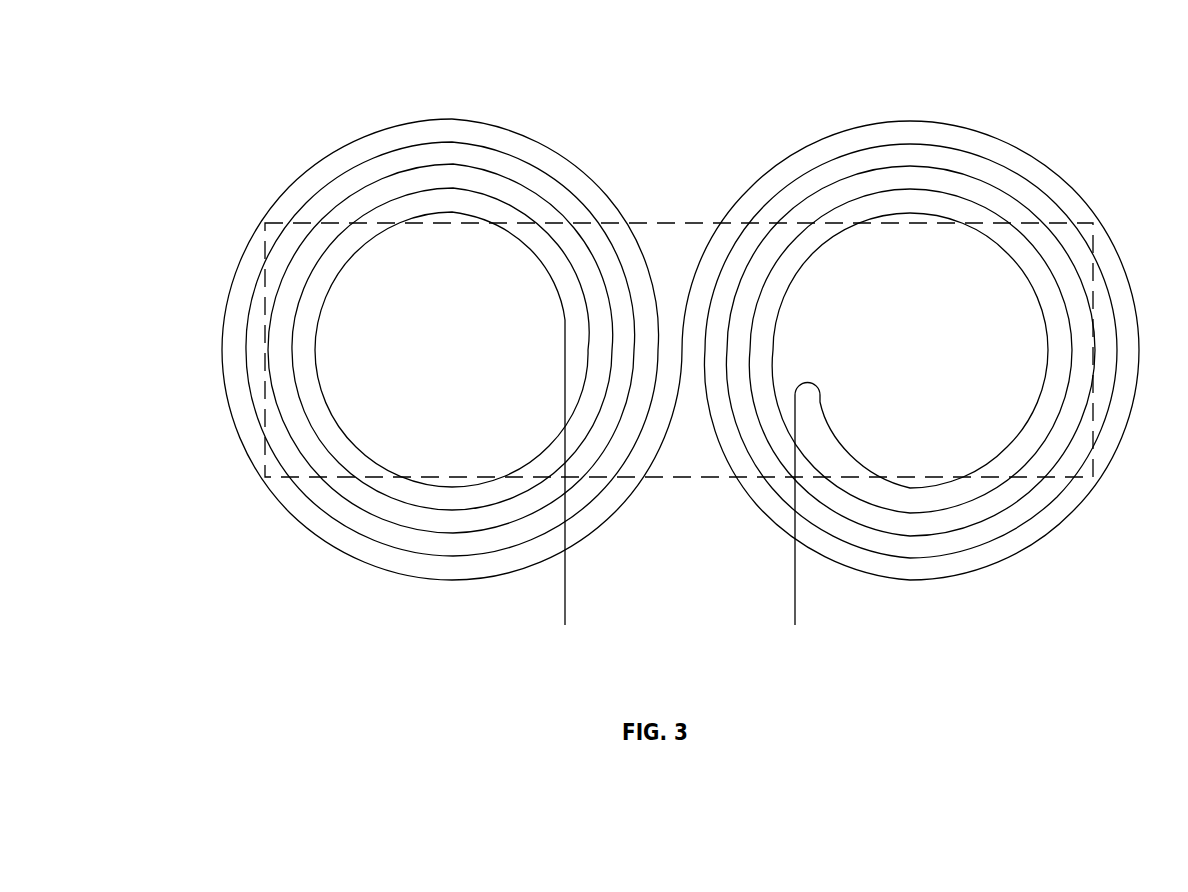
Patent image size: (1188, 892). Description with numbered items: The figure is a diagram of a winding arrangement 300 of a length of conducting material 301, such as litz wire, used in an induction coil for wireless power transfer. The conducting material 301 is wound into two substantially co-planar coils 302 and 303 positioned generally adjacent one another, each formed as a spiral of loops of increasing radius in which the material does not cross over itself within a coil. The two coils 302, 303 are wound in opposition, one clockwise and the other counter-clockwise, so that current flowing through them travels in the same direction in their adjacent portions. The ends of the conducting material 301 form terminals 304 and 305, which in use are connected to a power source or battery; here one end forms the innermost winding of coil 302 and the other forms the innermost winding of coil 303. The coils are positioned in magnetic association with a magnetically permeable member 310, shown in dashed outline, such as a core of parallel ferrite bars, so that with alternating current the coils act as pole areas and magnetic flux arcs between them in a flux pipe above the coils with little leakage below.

The winding arrangement 300 is at (251, 115).
The length of conducting material 301 is at (537, 135).
The coil 302 is at (432, 356).
The coil 303 is at (926, 363).
The terminal 304 is at (554, 489).
The terminal 305 is at (784, 526).
The magnetically permeable member 310 is at (1093, 466).